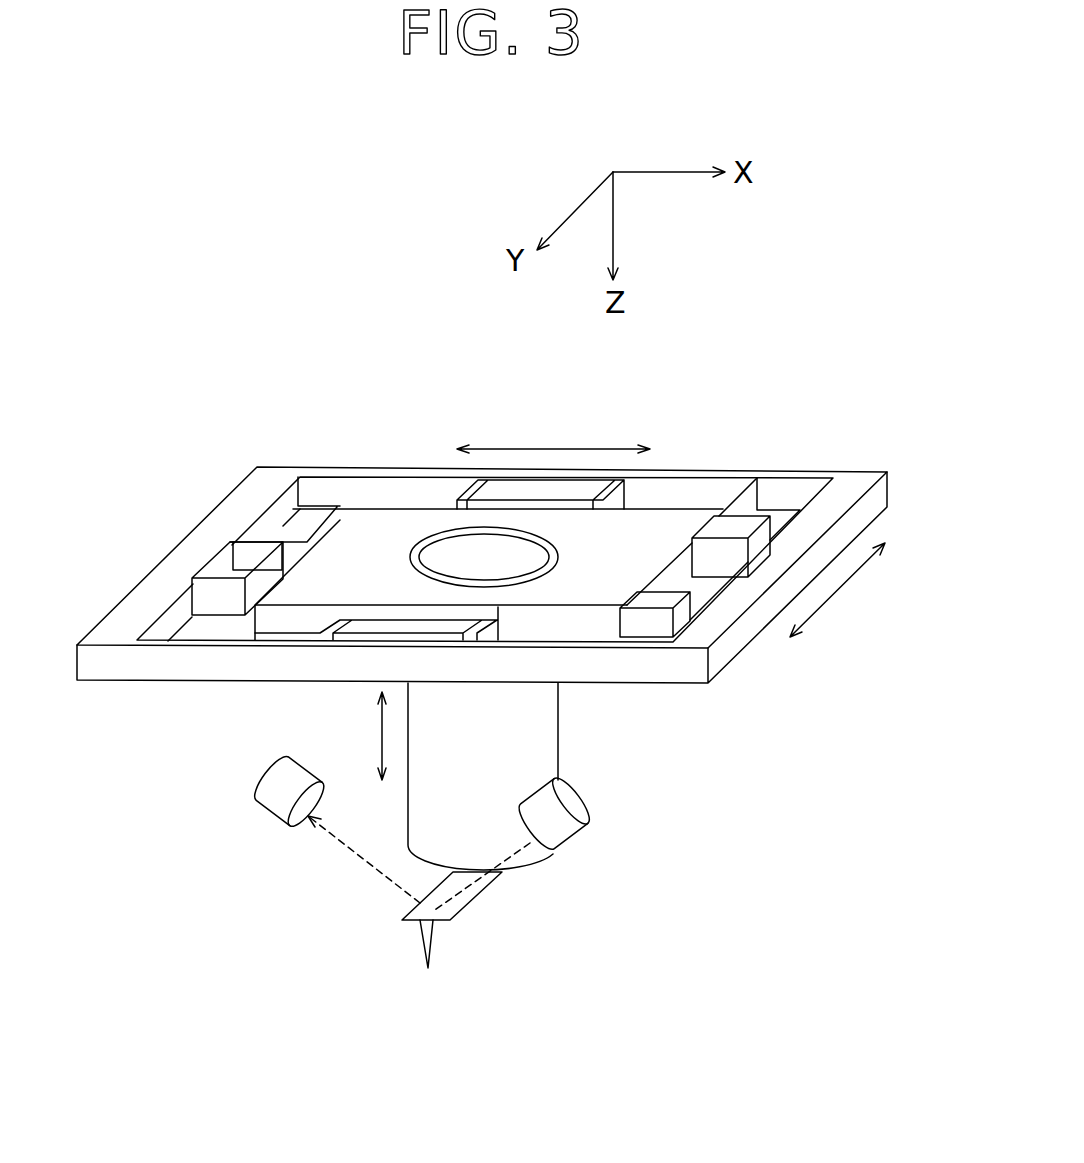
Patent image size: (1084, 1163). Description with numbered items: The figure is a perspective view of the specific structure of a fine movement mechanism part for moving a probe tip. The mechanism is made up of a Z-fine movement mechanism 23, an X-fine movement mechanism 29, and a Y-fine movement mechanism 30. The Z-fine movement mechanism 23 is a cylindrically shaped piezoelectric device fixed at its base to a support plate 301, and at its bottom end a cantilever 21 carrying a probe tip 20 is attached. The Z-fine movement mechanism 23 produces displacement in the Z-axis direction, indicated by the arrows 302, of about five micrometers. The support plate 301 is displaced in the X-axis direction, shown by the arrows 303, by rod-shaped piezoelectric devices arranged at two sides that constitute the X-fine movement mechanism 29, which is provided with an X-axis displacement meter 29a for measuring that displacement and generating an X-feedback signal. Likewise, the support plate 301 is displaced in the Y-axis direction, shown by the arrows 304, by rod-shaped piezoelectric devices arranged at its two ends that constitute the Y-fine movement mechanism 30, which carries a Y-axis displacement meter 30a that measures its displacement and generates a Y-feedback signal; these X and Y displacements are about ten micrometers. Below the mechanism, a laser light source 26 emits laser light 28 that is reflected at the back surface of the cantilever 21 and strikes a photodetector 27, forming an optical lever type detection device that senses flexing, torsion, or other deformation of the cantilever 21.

The probe tip 20 is at (420, 942).
The cantilever 21 is at (457, 907).
The Z-fine movement mechanism 23 is at (558, 727).
The laser light source 26 is at (563, 830).
The photodetector 27 is at (272, 805).
The laser light 28 is at (360, 863).
The X-fine movement mechanism 29 is at (527, 492).
The X-axis displacement meter 29a is at (286, 525).
The Y-fine movement mechanism 30 is at (262, 548).
The Y-axis displacement meter 30a is at (680, 627).
The support plate 301 is at (655, 522).
The arrows 302 is at (378, 737).
The arrows 303 is at (552, 448).
The arrows 304 is at (818, 612).